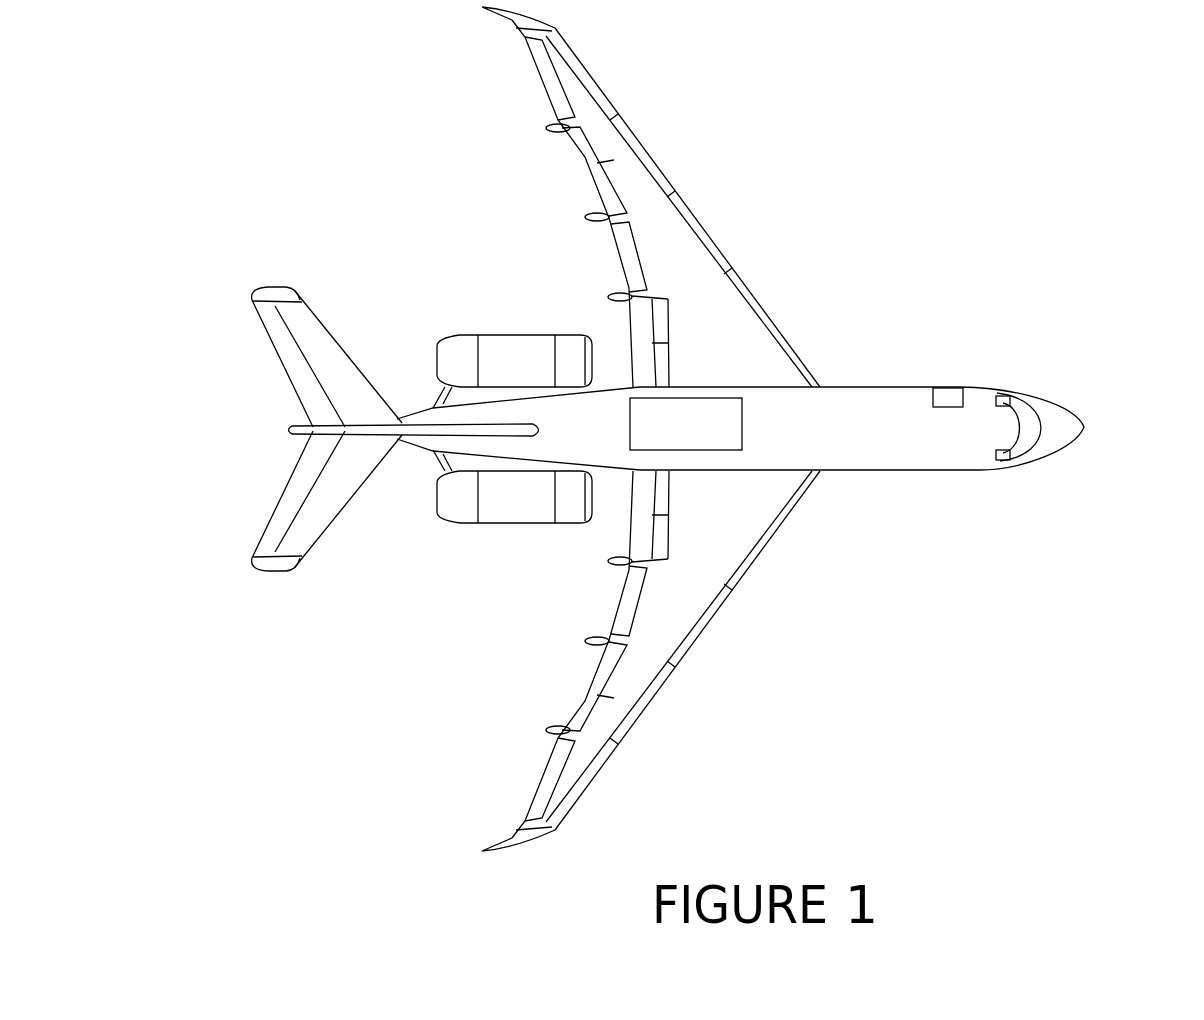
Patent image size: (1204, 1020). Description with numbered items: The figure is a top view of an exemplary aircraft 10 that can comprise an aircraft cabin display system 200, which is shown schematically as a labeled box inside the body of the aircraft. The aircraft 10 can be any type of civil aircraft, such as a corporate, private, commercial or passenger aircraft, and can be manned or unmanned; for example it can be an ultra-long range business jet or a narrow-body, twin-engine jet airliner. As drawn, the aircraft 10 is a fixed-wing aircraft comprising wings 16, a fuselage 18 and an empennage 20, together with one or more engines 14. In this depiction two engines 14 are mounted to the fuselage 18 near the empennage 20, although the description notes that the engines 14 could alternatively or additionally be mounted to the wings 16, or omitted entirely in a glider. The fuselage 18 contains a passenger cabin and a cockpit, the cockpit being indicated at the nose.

The aircraft 10 is at (1065, 120).
The engines 14 is at (513, 343).
The wings 16 is at (750, 254).
The fuselage 18 is at (740, 468).
The empennage 20 is at (265, 429).
The aircraft cabin display system 200 is at (712, 437).